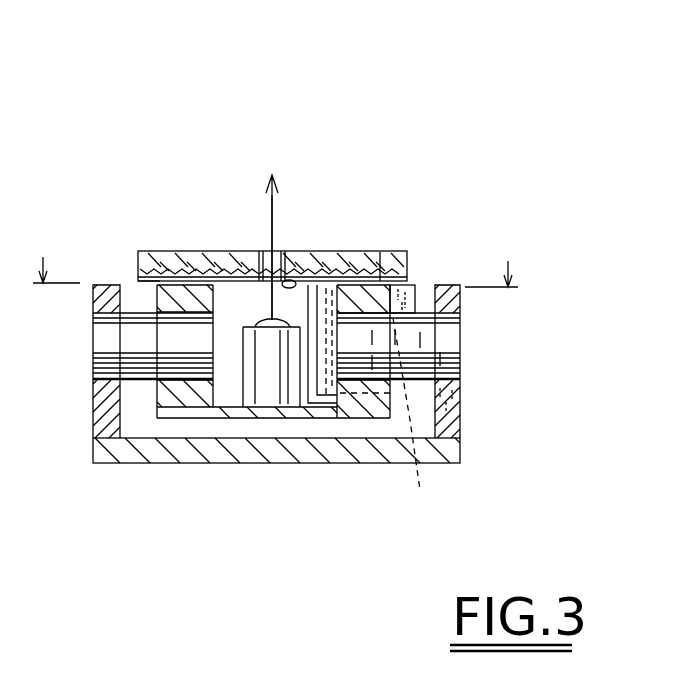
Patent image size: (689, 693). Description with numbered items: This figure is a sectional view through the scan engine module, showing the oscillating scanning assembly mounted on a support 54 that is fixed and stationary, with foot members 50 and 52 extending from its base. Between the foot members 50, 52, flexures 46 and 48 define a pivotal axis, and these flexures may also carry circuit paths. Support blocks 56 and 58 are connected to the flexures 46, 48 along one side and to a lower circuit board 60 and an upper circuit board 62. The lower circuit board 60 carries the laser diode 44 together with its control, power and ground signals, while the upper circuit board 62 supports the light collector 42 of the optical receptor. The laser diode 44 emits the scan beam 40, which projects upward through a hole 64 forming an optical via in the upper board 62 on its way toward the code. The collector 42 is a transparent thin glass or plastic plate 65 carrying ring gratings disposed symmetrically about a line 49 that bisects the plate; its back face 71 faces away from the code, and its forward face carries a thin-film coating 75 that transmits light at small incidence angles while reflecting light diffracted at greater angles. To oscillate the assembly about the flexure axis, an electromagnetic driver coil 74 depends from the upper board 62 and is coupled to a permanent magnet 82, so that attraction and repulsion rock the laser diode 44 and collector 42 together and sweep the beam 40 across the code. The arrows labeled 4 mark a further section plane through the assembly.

The section line 4- 4 is at (276, 291).
The scan beam 40 is at (277, 250).
The light collector 42 is at (346, 252).
The laser diode 44 is at (268, 320).
The flexure 46 is at (103, 338).
The flexure 48 is at (457, 326).
The bisecting line 49 is at (378, 280).
The foot member 50 is at (105, 400).
The foot member 52 is at (452, 437).
The support 54 is at (353, 457).
The support block 56 is at (168, 298).
The support block 58 is at (355, 395).
The lower circuit board 60 is at (195, 418).
The upper circuit board 62 is at (408, 279).
The hole 64 is at (294, 270).
The collector plate 65 is at (398, 286).
The back face 71 is at (142, 286).
The coil 74 is at (396, 418).
The coating 75 is at (223, 252).
The permanent magnet 82 is at (440, 393).